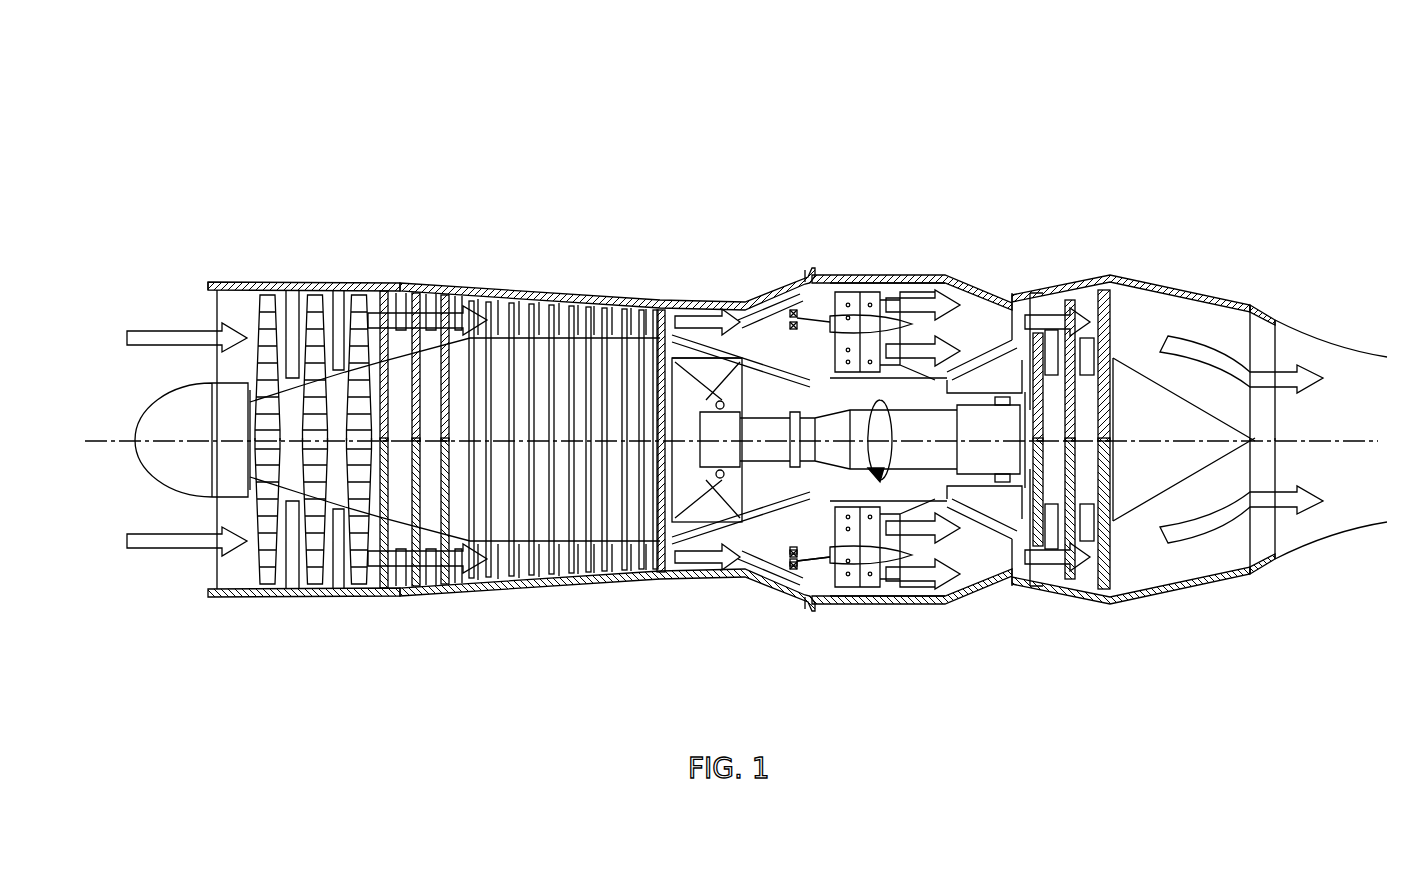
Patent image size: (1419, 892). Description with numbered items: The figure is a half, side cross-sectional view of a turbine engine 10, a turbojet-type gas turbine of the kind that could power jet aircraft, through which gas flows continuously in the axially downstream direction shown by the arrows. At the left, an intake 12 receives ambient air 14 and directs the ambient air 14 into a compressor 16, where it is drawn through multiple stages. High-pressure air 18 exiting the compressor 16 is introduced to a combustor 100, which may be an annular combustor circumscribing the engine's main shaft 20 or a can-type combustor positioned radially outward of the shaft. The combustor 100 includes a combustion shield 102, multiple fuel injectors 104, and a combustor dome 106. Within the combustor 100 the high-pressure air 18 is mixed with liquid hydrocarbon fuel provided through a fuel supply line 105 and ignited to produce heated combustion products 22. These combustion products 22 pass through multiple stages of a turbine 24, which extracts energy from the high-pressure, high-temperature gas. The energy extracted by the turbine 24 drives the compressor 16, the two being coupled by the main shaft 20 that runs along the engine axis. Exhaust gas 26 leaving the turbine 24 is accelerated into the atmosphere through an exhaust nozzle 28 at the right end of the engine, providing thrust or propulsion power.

The turbine engine 10 is at (217, 140).
The intake 12 is at (226, 282).
The ambient air 14 is at (155, 330).
The compressor 16 is at (352, 276).
The high-pressure air 18 is at (683, 305).
The main shaft 20 is at (949, 433).
The combustion products 22 is at (1020, 300).
The turbine 24 is at (1062, 278).
The exhaust gas 26 is at (1200, 353).
The exhaust nozzle 28 is at (1272, 562).
The combustor 100 is at (860, 268).
The combustion shield 102 is at (965, 555).
The fuel injectors 104 is at (785, 562).
The fuel supply line 105 is at (690, 578).
The combustor dome 106 is at (790, 592).